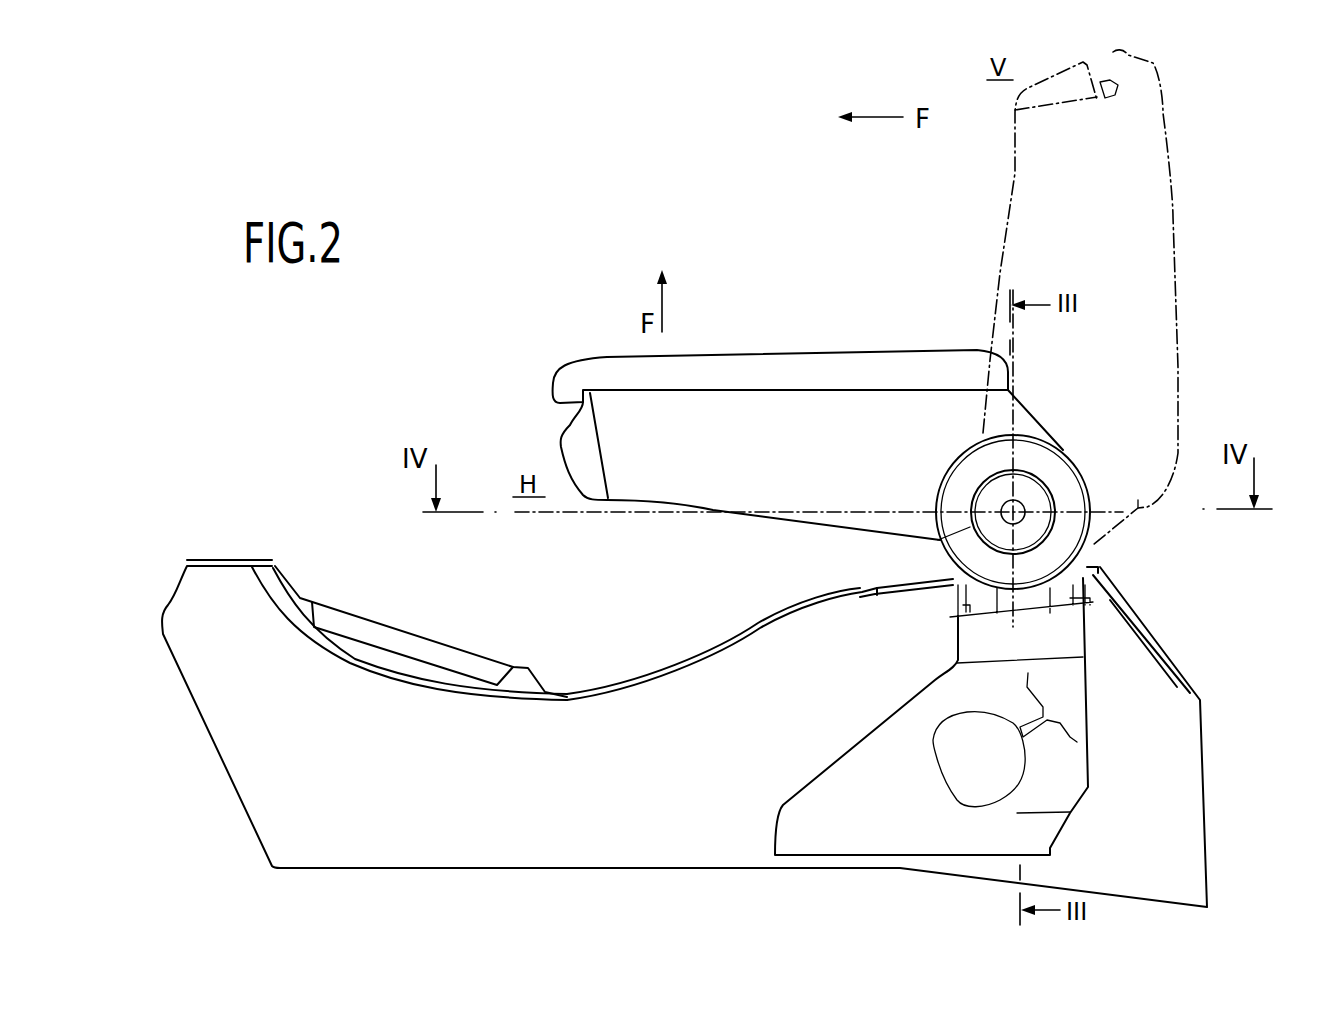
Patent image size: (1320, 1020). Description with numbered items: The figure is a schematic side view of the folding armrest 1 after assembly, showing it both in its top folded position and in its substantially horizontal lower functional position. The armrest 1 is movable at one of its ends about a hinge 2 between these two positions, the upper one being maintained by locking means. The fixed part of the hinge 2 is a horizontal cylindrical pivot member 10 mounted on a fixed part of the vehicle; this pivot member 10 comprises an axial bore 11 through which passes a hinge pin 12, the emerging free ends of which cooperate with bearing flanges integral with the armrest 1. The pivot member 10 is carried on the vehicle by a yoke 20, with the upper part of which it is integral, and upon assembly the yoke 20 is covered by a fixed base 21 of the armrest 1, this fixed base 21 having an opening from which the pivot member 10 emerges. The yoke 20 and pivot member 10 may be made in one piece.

The folding armrest 1 is at (888, 281).
The hinge 2 is at (1098, 555).
The pivot member 10 is at (1067, 495).
The axial bore 11 is at (1025, 507).
The hinge pin 12 is at (1015, 503).
The yoke 20 is at (875, 770).
The fixed base 21 is at (800, 618).